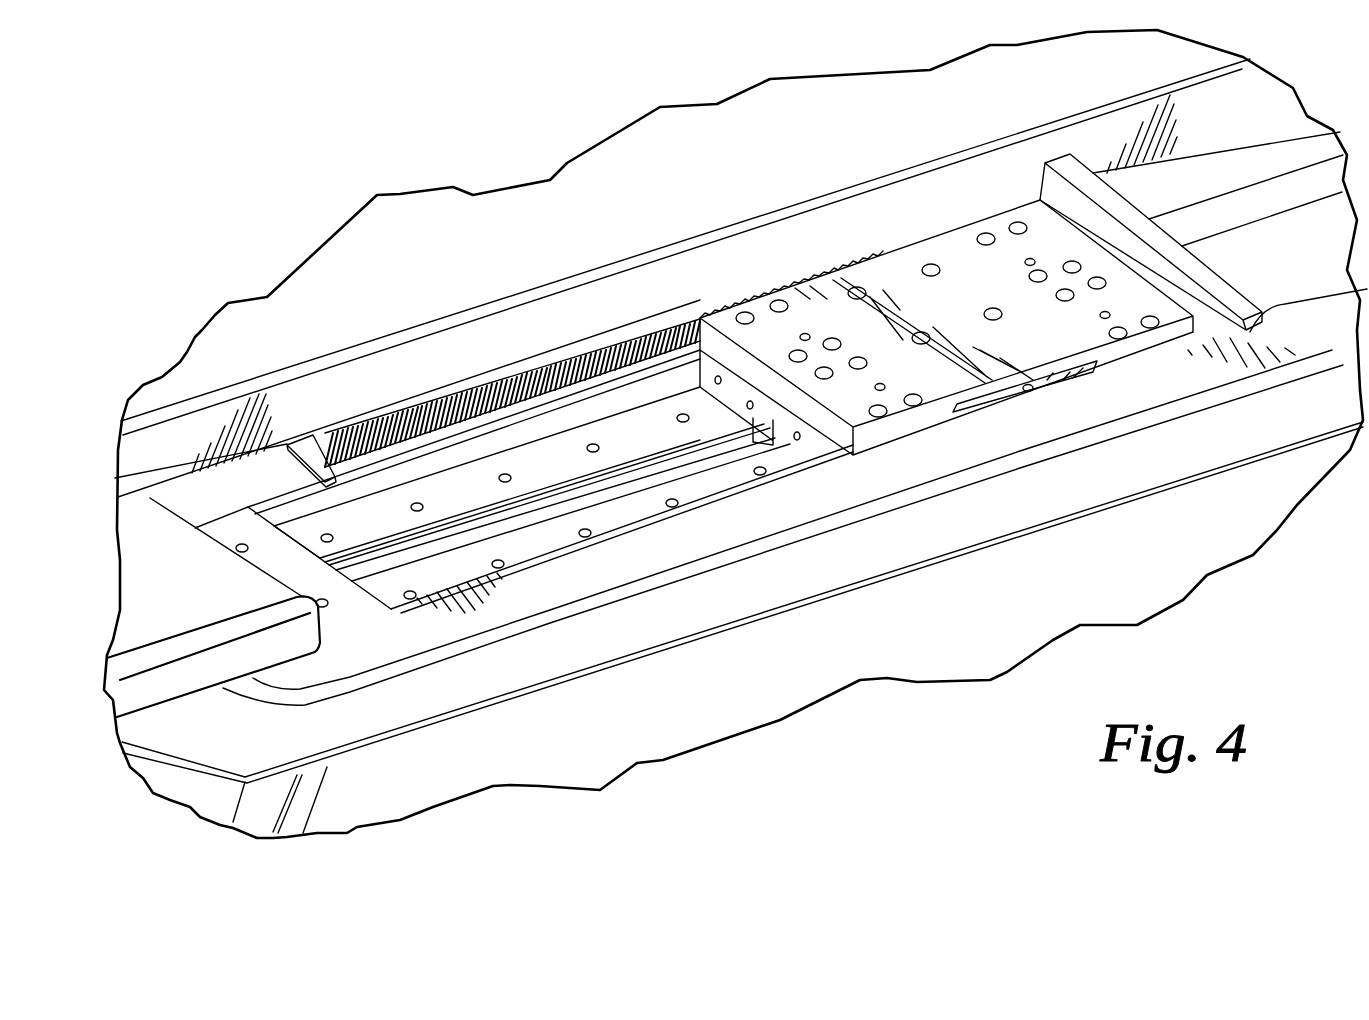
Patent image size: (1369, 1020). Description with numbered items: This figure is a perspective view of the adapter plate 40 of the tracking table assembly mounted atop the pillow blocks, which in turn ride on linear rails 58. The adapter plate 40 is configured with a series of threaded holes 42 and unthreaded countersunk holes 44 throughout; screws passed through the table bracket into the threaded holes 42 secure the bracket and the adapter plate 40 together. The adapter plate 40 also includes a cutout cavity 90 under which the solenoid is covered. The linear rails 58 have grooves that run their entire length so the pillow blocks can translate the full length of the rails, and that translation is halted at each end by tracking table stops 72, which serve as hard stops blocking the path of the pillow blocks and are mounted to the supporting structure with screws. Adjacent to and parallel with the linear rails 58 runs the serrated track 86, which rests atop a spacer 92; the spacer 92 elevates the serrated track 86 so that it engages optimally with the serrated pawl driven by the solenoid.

The adapter plate 40 is at (968, 300).
The threaded holes 42 is at (884, 391).
The unthreaded countersunk holes 44 is at (1020, 276).
The linear rails 58 is at (357, 522).
The tracking table stops 72 is at (360, 606).
The serrated track 86 is at (463, 390).
The cutout cavity 90 is at (1007, 398).
The spacer 92 is at (302, 442).